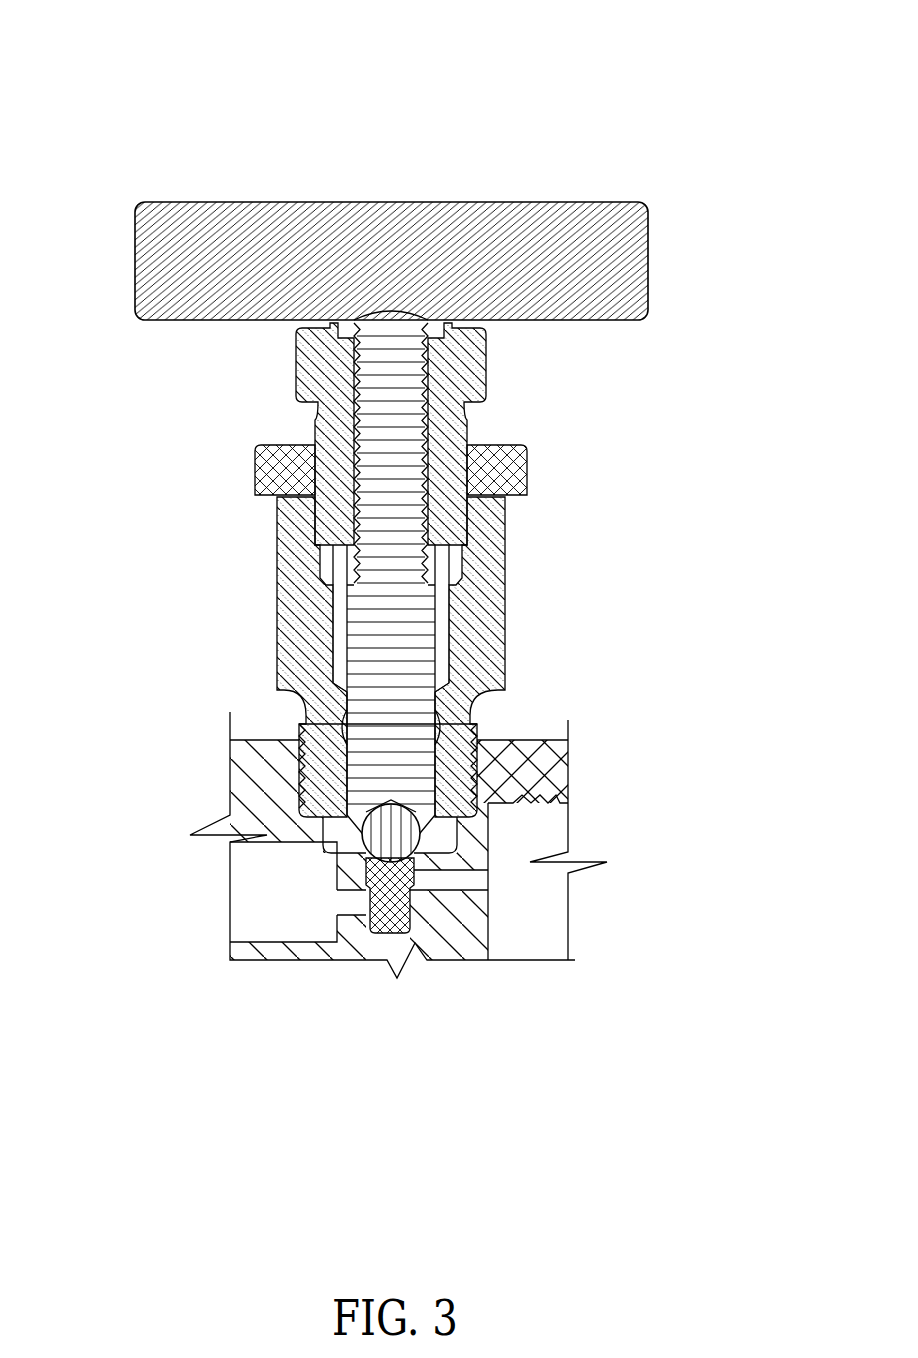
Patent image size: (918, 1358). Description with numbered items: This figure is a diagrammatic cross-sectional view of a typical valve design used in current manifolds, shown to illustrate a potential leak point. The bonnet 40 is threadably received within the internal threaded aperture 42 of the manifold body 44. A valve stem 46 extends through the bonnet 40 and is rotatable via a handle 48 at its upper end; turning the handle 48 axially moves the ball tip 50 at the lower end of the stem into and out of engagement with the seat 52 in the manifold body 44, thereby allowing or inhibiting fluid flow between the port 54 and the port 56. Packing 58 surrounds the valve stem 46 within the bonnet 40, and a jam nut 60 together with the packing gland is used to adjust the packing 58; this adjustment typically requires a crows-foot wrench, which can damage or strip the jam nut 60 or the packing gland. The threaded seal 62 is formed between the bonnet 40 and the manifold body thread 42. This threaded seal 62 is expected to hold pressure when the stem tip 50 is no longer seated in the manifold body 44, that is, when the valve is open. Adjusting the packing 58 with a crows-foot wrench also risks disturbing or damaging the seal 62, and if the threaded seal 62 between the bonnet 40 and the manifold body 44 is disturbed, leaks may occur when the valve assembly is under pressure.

The bonnet 40 is at (505, 577).
The internal threaded aperture 42 is at (473, 767).
The manifold body 44 is at (473, 787).
The valve stem 46 is at (382, 606).
The handle 48 is at (478, 200).
The ball tip 50 is at (397, 865).
The seat 52 is at (415, 943).
The port 54 is at (477, 880).
The port 56 is at (347, 905).
The packing 58 is at (340, 663).
The jam nut 60 is at (296, 354).
The threaded seal 62 is at (498, 740).